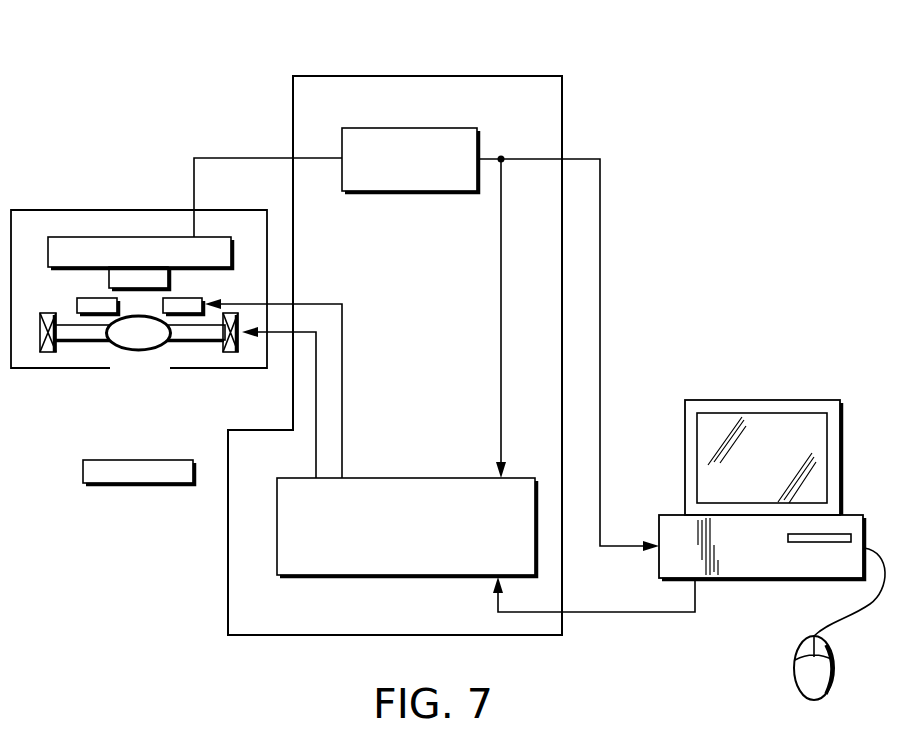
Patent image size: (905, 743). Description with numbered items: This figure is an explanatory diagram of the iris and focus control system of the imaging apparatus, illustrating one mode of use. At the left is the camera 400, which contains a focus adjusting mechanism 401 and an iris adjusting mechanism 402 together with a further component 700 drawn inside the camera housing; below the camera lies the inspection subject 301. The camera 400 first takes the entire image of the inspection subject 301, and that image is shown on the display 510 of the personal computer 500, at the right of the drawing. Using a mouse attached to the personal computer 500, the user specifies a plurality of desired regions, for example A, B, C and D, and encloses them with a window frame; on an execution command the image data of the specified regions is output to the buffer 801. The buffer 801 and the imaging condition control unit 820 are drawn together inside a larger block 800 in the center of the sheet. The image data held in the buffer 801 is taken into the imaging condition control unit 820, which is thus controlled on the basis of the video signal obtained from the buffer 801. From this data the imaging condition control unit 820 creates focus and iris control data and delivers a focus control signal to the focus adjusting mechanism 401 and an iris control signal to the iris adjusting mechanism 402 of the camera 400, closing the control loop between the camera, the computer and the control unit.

The image processing unit 800 is at (426, 76).
The buffer 801 is at (413, 196).
The imaging condition control unit 820 is at (413, 478).
The camera 400 is at (58, 210).
The detector 700 is at (138, 237).
The iris adjusting mechanism 402 is at (185, 298).
The focus adjusting mechanism 401 is at (232, 352).
The inspection subject 301 is at (139, 486).
The display 510 is at (763, 400).
The personal computer 500 is at (746, 582).